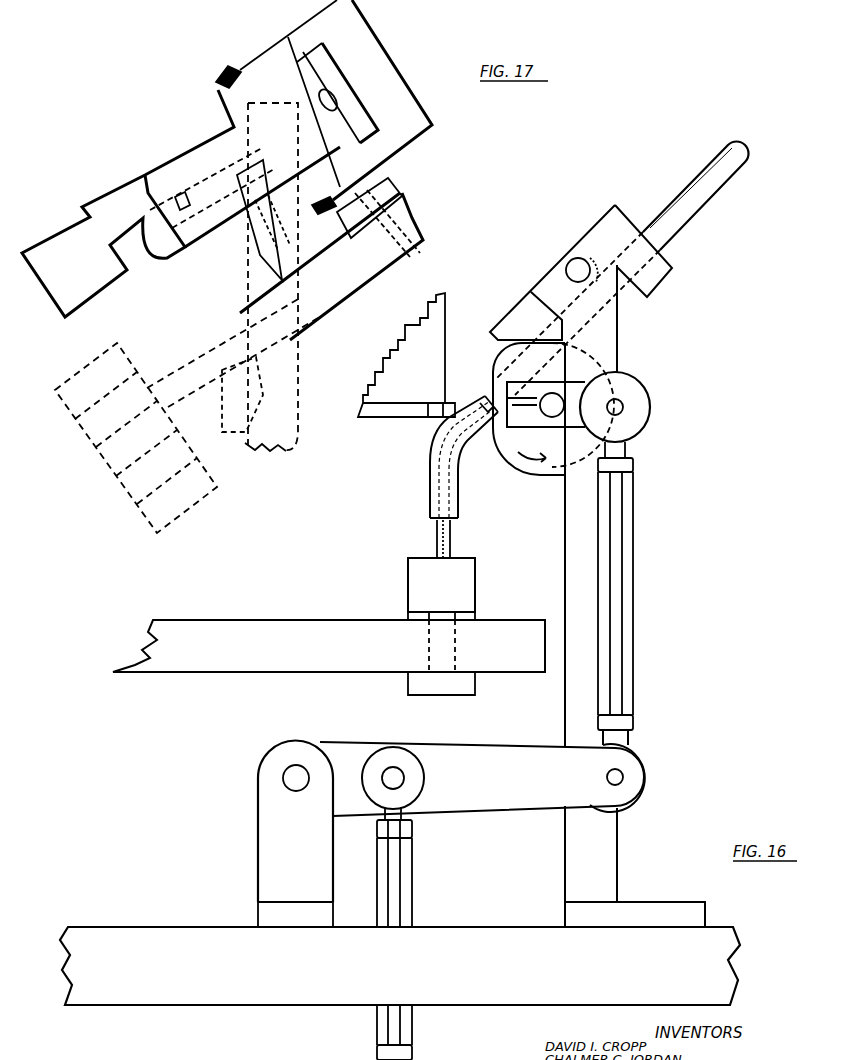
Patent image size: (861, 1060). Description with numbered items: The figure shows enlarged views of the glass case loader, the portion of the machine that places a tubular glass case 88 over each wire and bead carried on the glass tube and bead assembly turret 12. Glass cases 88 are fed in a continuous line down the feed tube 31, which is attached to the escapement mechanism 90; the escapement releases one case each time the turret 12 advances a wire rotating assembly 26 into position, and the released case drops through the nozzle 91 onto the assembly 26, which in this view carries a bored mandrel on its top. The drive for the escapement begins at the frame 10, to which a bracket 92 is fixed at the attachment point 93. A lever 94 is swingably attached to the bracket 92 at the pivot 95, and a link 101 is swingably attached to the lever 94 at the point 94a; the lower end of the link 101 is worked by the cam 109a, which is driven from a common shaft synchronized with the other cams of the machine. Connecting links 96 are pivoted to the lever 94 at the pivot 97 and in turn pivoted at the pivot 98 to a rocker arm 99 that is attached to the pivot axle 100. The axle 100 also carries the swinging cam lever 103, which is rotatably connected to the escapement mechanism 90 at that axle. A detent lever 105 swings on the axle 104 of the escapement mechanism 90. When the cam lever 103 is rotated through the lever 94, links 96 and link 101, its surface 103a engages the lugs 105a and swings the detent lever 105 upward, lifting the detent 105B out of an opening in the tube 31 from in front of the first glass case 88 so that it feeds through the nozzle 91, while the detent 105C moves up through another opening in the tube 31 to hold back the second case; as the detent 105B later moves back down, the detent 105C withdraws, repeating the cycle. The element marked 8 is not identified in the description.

In FIG. 17, the pin 8 is at (378, 223).
In FIG. 16, the frame 10 is at (155, 947).
In FIG. 16, the glass tube and bead assembly turret 12 is at (247, 655).
In FIG. 16, the wire rotating assembly 26 is at (455, 583).
In FIG. 16, the feed tube 31 is at (698, 217).
In FIG. 17, the feed tube 31 is at (330, 93).
In FIG. 16, the glass case 88 is at (450, 537).
In FIG. 16, the escapement mechanism 90 is at (670, 277).
In FIG. 16, the nozzle 91 is at (428, 480).
In FIG. 16, the bracket 92 is at (268, 843).
In FIG. 16, the attachment point 93 is at (258, 925).
In FIG. 16, the lever 94 is at (500, 792).
In FIG. 17, the lever 94 is at (333, 295).
In FIG. 16, the link pivot 94a is at (395, 778).
In FIG. 17, the link pivot 94a is at (212, 412).
In FIG. 16, the lever pivot 95 is at (297, 778).
In FIG. 16, the connecting links 96 is at (627, 677).
In FIG. 16, the link pivot 97 is at (615, 777).
In FIG. 17, the link pivot 97 is at (393, 253).
In FIG. 16, the rocker arm pivot 98 is at (622, 410).
In FIG. 16, the rocker arm 99 is at (573, 392).
In FIG. 16, the pivot axle 100 is at (552, 405).
In FIG. 17, the pivot axle 100 is at (295, 263).
In FIG. 16, the link 101 is at (403, 888).
In FIG. 16, the swinging cam lever 103 is at (517, 445).
In FIG. 17, the swinging cam lever 103 is at (398, 178).
In FIG. 16, the cam surface 103a is at (498, 345).
In FIG. 16, the axle 104 is at (577, 262).
In FIG. 17, the axle 104 is at (227, 66).
In FIG. 16, the detent lever 105 is at (518, 317).
In FIG. 17, the detent lever 105 is at (175, 173).
In FIG. 16, the lugs 105a is at (537, 318).
In FIG. 16, the detent 105B is at (475, 410).
In FIG. 17, the detent 105B is at (178, 200).
In FIG. 17, the detent 105C is at (216, 190).
In FIG. 16, the cam 109a is at (378, 1052).